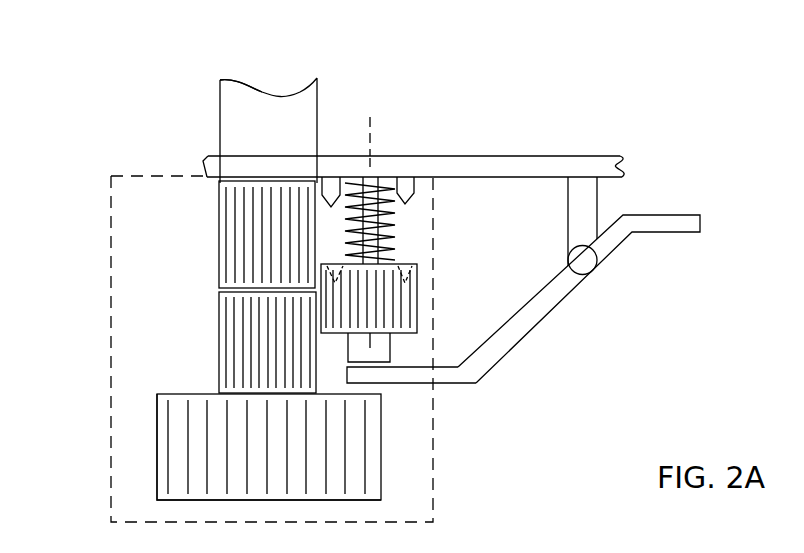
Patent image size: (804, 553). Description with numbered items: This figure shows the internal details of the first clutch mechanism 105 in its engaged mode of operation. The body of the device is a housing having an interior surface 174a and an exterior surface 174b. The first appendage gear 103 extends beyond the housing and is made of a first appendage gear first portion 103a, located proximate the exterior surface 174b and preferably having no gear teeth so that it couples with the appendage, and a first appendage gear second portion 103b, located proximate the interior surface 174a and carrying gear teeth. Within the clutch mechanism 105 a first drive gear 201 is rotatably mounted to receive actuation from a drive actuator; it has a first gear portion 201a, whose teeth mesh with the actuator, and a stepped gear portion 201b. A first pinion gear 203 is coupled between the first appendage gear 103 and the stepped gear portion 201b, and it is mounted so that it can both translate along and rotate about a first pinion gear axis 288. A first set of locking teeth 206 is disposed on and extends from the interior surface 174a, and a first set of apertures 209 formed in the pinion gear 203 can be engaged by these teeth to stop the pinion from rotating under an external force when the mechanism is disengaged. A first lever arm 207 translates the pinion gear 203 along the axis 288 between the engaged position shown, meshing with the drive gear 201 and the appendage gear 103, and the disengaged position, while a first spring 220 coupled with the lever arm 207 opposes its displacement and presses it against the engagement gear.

The first appendage gear 103 is at (283, 120).
The first appendage gear first portion 103a is at (252, 135).
The first appendage gear second portion 103b is at (233, 250).
The first clutch mechanism 105 is at (433, 469).
The interior surface of the housing 174a is at (610, 156).
The exterior surface of the housing 174b is at (537, 155).
The first drive gear 201 is at (163, 417).
The first gear portion 201a is at (175, 480).
The stepped gear portion 201b is at (242, 348).
The first pinion gear 203 is at (402, 307).
The first set of locking teeth 206 is at (407, 177).
The first lever arm 207 is at (545, 300).
The first set of apertures 209 is at (405, 262).
The first spring 220 is at (368, 177).
The first pinion gear axis 288 is at (370, 117).